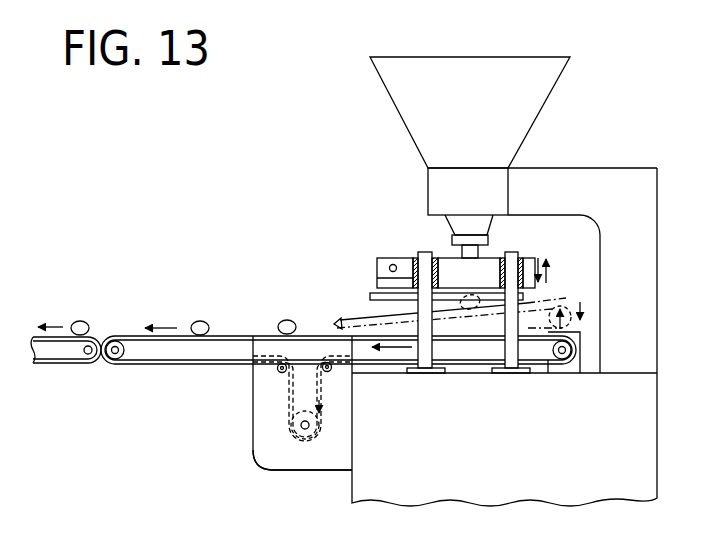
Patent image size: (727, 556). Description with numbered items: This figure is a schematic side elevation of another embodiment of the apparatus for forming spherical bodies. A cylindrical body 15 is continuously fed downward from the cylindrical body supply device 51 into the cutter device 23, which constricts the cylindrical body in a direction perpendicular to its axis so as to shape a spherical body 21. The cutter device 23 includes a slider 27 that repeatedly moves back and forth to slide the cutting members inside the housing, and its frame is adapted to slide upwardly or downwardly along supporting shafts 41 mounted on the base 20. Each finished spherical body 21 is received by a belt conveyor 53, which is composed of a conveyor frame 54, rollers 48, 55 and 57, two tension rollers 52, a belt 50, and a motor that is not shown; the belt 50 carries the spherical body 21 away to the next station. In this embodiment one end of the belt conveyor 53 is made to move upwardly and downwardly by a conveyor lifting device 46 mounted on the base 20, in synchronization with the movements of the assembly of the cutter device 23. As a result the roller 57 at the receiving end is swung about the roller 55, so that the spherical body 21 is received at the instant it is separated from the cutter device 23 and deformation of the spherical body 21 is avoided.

The cylindrical body 15 is at (456, 256).
The base 20 is at (657, 500).
The spherical body 21 is at (200, 320).
The cutter device 23 is at (533, 252).
The slider 27 is at (393, 264).
The supporting shafts 41 is at (426, 360).
The conveyor lifting device 46 is at (578, 360).
The roller 48 is at (304, 432).
The belt 50 is at (246, 335).
The cylindrical body supply device 51 is at (538, 141).
The tension rollers 52 is at (278, 370).
The belt conveyor 53 is at (558, 294).
The conveyor frame 54 is at (330, 472).
The roller 55 is at (118, 364).
The roller 57 is at (566, 364).